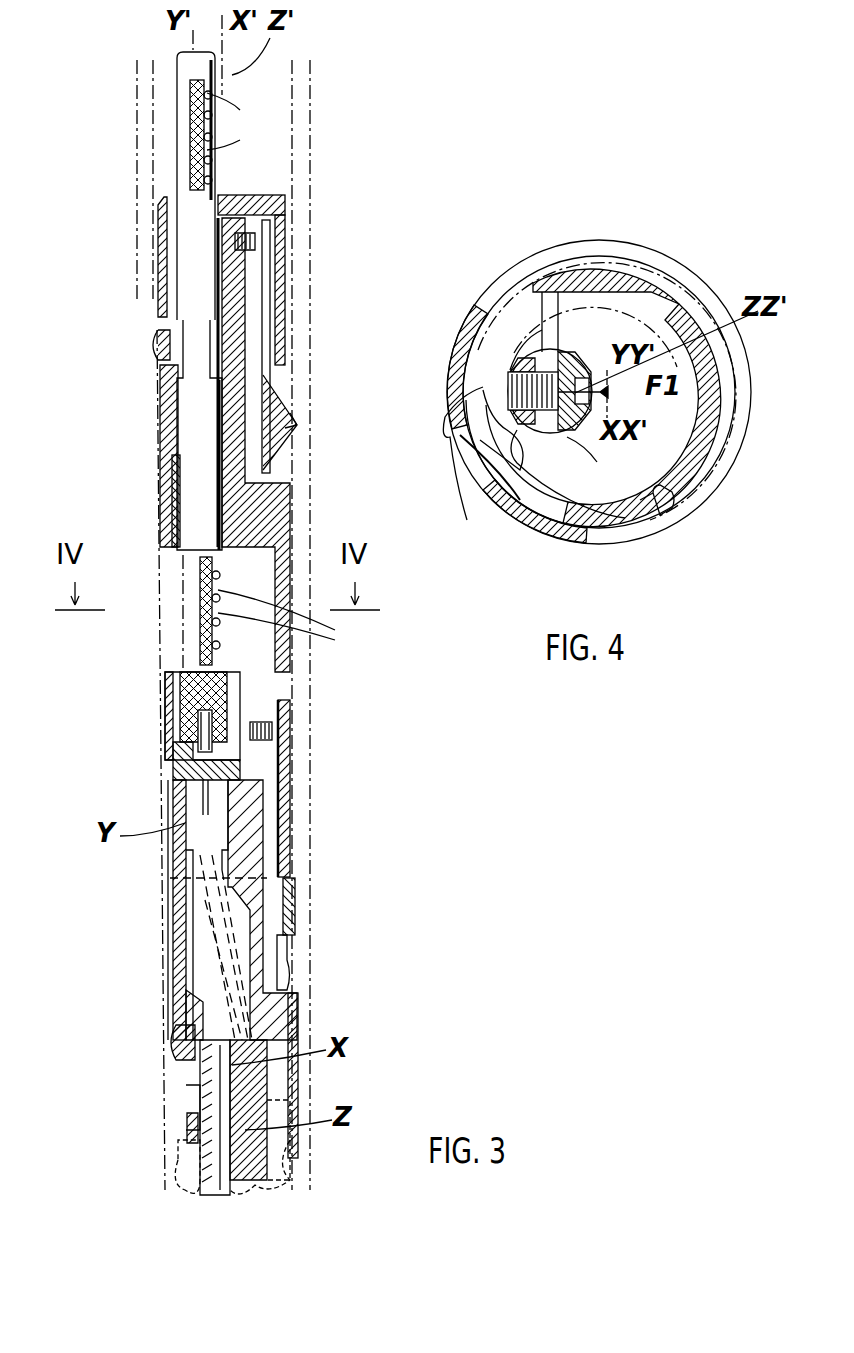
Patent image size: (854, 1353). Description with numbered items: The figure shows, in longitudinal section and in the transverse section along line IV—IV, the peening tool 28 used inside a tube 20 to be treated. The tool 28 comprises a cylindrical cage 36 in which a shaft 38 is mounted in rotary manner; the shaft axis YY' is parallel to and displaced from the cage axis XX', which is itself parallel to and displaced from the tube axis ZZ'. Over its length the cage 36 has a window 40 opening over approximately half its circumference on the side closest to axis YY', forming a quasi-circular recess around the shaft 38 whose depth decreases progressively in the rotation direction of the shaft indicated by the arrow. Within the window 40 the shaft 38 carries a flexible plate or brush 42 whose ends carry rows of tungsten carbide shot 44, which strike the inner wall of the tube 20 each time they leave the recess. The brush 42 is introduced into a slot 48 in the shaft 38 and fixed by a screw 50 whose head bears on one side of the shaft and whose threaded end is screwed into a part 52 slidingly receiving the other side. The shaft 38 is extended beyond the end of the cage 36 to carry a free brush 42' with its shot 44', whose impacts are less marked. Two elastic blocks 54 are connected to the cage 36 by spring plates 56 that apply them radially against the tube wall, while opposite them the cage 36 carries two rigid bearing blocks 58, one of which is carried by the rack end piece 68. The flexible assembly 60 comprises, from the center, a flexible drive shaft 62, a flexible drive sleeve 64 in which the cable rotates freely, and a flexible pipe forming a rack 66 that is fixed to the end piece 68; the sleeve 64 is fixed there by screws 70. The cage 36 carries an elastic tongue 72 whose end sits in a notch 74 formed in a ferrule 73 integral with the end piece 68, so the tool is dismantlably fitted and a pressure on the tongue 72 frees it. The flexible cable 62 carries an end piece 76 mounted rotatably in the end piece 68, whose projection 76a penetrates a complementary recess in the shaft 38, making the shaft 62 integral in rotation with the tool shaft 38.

In FIG. 3, the tube 20 is at (300, 135).
In FIG. 4, the tube 20 is at (468, 312).
In FIG. 3, the tool 28 is at (150, 485).
In FIG. 3, the cylindrical cage 36 is at (168, 413).
In FIG. 4, the cylindrical cage 36 is at (612, 280).
In FIG. 3, the shaft 38 is at (190, 255).
In FIG. 4, the shaft 38 is at (541, 340).
In FIG. 3, the window 40 is at (262, 650).
In FIG. 4, the window 40 is at (690, 480).
In FIG. 3, the flexible plate or brush 42 is at (150, 613).
In FIG. 4, the flexible plate or brush 42 is at (582, 506).
In FIG. 3, the free brush 42' is at (140, 135).
In FIG. 3, the shot 44 is at (295, 619).
In FIG. 4, the shot 44 is at (598, 390).
In FIG. 3, the shot 44' is at (247, 121).
In FIG. 4, the slot 48 is at (568, 429).
In FIG. 4, the screw 50 is at (515, 372).
In FIG. 4, the part 52 is at (566, 528).
In FIG. 3, the elastic blocks 54 is at (280, 390).
In FIG. 4, the elastic blocks 54 is at (715, 340).
In FIG. 3, the spring plates 56 is at (282, 295).
In FIG. 3, the rigid bearing blocks 58 is at (156, 335).
In FIG. 4, the rigid bearing blocks 58 is at (460, 470).
In FIG. 3, the flexible assembly 60 is at (292, 1170).
In FIG. 3, the flexible drive shaft 62 is at (215, 960).
In FIG. 3, the flexible drive sleeve 64 is at (215, 1105).
In FIG. 3, the flexible pipe forming a rack 66 is at (178, 1176).
In FIG. 3, the rack end piece 68 is at (268, 815).
In FIG. 3, the screws 70 is at (282, 1100).
In FIG. 3, the elastic tongue 72 is at (283, 942).
In FIG. 3, the ferrule 73 is at (170, 920).
In FIG. 3, the notch 74 is at (290, 985).
In FIG. 3, the end piece 76 is at (180, 788).
In FIG. 3, the projection 76a is at (180, 712).